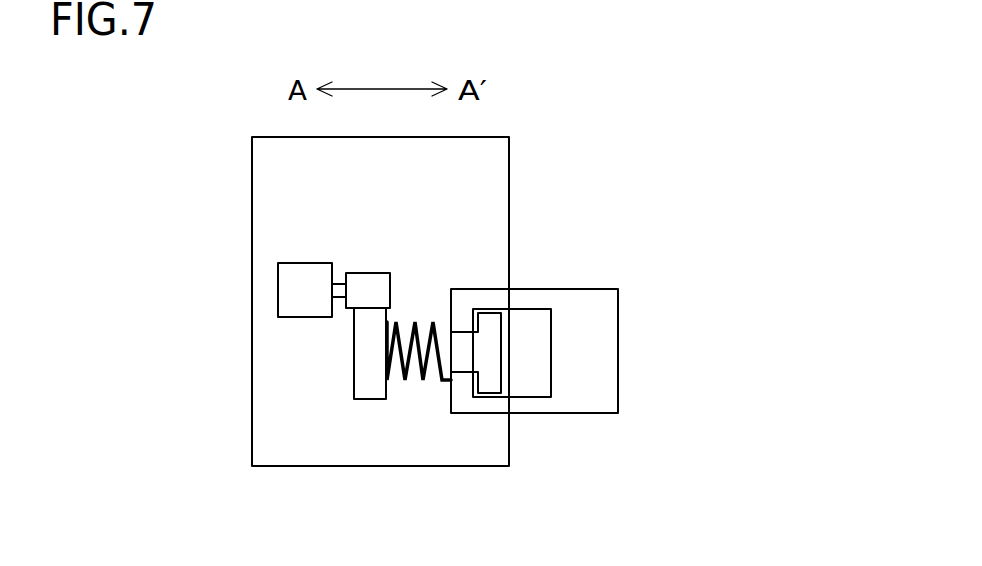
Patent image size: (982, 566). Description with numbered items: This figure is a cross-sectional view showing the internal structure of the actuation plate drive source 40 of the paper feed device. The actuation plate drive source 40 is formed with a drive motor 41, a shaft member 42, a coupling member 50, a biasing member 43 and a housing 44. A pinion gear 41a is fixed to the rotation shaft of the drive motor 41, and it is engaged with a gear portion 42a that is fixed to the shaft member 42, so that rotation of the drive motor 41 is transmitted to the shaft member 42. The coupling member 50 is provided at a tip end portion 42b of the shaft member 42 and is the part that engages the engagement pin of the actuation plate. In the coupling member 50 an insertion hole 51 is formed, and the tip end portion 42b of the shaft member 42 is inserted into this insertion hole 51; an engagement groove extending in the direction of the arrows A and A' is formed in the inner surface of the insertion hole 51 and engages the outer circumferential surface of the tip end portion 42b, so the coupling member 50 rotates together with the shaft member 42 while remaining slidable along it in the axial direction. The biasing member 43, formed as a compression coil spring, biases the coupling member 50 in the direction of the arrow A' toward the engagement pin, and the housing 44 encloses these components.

The actuation plate drive source 40 is at (627, 134).
The drive motor 41 is at (293, 290).
The pinion gear 41a is at (369, 287).
The shaft member 42 is at (435, 386).
The gear portion 42a is at (372, 403).
The tip end portion 42b is at (488, 383).
The biasing member 43 is at (432, 318).
The housing 44 is at (275, 202).
The coupling member 50 is at (587, 375).
The insertion hole 51 is at (532, 332).